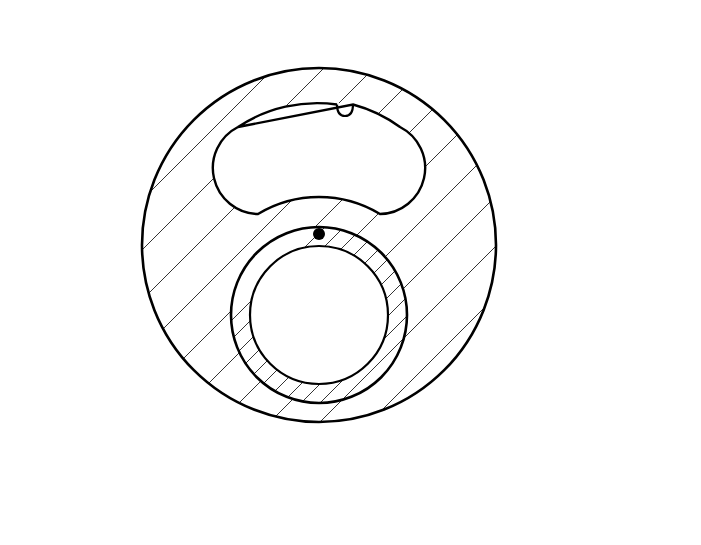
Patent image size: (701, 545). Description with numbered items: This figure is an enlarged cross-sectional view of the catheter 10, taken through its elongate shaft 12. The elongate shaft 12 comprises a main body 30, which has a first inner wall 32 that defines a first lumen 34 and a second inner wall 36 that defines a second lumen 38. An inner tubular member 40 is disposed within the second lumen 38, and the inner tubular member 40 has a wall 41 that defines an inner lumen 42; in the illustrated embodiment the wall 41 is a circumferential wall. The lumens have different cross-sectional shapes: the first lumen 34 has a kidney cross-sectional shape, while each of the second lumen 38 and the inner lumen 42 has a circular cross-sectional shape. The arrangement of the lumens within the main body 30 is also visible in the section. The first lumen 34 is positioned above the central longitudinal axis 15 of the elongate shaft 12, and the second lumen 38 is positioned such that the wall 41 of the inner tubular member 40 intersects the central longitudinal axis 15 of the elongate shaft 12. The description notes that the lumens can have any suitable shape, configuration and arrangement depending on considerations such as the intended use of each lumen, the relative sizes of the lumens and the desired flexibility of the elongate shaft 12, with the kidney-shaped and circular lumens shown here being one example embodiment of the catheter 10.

The catheter 10 is at (146, 78).
The elongate shaft 12 is at (143, 236).
The longitudinal axis 15 is at (323, 230).
The main body 30 is at (468, 229).
The first inner wall 32 is at (345, 112).
The first lumen 34 is at (333, 158).
The second inner wall 36 is at (237, 311).
The second lumen 38 is at (222, 362).
The inner tubular member 40 is at (388, 356).
The wall 41 is at (397, 298).
The inner lumen 42 is at (333, 326).